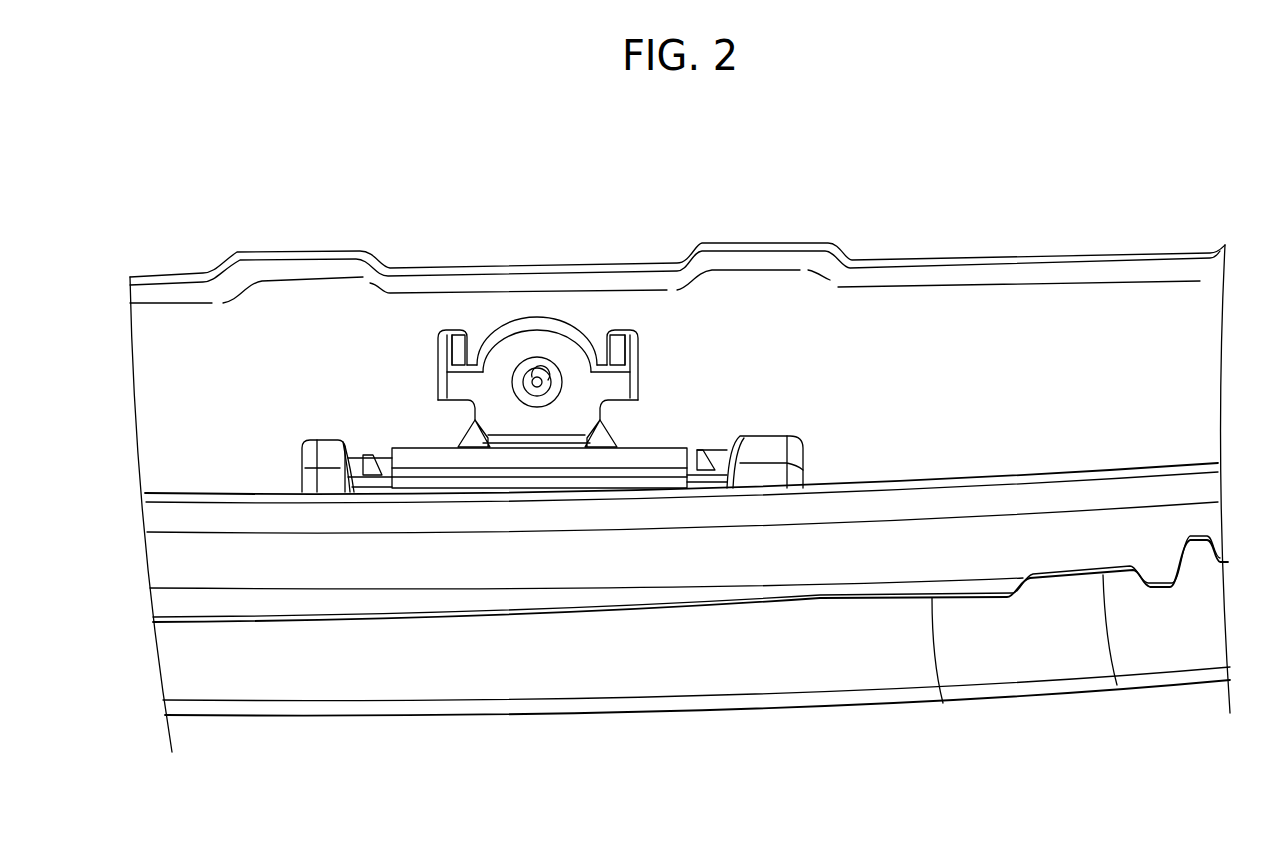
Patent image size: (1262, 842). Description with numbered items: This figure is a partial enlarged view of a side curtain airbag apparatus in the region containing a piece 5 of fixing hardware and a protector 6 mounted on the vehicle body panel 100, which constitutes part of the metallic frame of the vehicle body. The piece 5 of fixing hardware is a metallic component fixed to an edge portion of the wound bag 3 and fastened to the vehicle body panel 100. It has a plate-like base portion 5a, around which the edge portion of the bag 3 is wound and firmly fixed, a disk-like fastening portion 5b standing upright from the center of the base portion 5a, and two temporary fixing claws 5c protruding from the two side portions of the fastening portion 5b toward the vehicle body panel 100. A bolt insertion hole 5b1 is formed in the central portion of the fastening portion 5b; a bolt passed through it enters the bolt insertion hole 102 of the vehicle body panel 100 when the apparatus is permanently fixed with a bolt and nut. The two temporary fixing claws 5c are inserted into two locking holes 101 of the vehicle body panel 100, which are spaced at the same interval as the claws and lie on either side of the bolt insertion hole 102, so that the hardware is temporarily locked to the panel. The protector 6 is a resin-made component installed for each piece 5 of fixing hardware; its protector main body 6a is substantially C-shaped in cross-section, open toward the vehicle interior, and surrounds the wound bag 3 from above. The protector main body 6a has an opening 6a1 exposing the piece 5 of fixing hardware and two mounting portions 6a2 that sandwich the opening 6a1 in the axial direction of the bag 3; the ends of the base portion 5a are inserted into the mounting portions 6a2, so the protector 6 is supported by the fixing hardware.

The bag 3 is at (1172, 643).
The piece of fixing hardware 5 is at (490, 302).
The base portion 5a is at (722, 460).
The fastening portion 5b is at (483, 397).
The bolt insertion hole 5b1 is at (522, 395).
The temporary fixing claw 5c is at (438, 340).
The protector 6 is at (1061, 470).
The protector main body 6a is at (972, 503).
The opening 6a1 is at (348, 450).
The mounting portion 6a2 is at (307, 461).
The vehicle body panel 100 is at (920, 298).
The locking hole 101 is at (462, 338).
The bolt insertion hole 102 is at (543, 372).